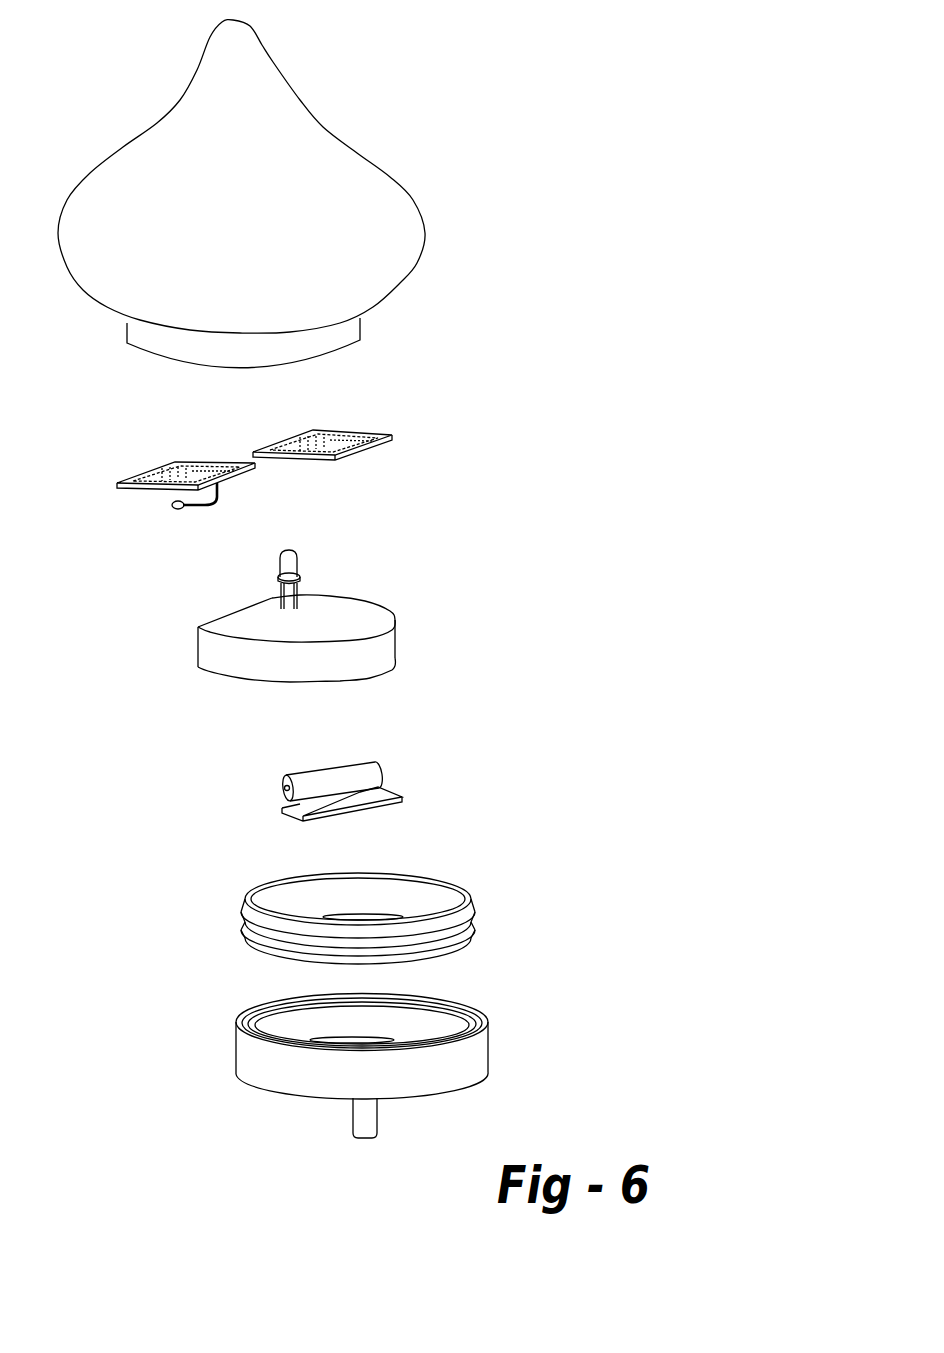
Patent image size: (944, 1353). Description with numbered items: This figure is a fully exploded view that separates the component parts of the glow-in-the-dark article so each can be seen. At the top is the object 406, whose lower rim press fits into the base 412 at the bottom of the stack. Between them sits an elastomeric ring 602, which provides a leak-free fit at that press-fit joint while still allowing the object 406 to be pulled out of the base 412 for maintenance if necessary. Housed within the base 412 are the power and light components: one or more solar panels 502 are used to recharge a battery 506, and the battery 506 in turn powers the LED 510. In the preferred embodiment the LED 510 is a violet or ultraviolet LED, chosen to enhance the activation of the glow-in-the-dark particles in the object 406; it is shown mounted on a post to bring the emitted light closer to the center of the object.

The object 406 is at (305, 198).
The solar panel 502 is at (352, 430).
The LED 510 is at (290, 562).
The battery 506 is at (373, 762).
The elastomeric ring 602 is at (437, 897).
The base 412 is at (488, 1050).